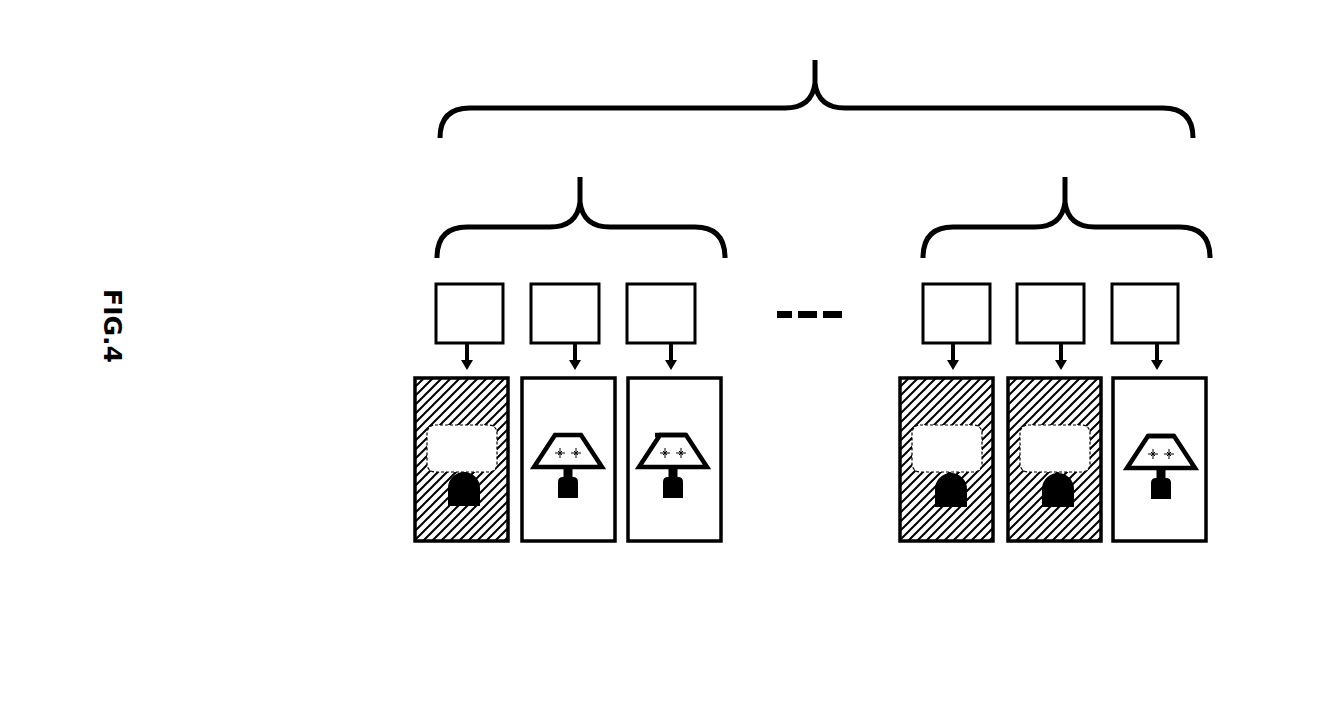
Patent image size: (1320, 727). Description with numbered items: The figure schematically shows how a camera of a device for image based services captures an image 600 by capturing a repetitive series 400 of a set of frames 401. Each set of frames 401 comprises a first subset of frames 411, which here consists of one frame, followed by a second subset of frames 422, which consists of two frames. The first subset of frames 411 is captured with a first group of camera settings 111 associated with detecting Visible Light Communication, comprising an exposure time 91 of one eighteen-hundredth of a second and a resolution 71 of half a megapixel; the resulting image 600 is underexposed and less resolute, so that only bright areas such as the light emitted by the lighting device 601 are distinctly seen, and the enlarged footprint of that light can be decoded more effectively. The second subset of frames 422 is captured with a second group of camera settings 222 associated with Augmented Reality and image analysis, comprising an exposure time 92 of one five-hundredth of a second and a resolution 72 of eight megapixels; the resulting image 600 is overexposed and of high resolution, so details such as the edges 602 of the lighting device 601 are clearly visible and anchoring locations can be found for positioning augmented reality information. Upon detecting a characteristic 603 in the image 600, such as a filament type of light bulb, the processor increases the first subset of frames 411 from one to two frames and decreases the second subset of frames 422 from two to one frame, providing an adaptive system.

The repetitive series 400 is at (794, 52).
The set of frames 401 is at (559, 167).
The first subset of frames 411 is at (760, 313).
The second subset of frames 422 is at (854, 313).
The image 600 is at (345, 440).
The lighting device 601 is at (419, 490).
The edges 602 is at (701, 432).
The characteristic 603 is at (680, 418).
The first group of camera settings 111 is at (738, 507).
The exposure time 91 is at (738, 507).
The resolution 71 is at (738, 507).
The second group of camera settings 222 is at (864, 507).
The exposure time 92 is at (864, 507).
The resolution 72 is at (864, 507).